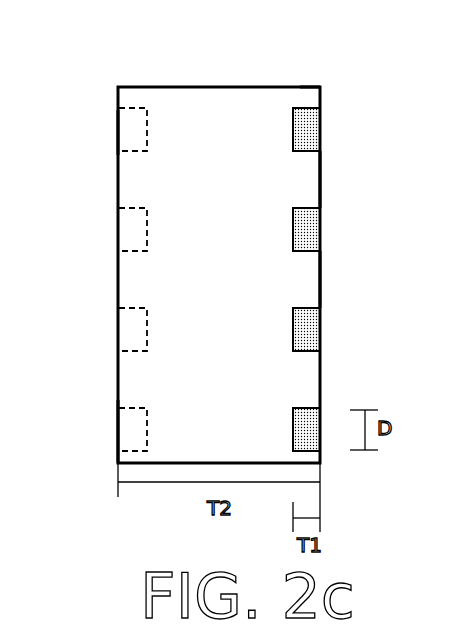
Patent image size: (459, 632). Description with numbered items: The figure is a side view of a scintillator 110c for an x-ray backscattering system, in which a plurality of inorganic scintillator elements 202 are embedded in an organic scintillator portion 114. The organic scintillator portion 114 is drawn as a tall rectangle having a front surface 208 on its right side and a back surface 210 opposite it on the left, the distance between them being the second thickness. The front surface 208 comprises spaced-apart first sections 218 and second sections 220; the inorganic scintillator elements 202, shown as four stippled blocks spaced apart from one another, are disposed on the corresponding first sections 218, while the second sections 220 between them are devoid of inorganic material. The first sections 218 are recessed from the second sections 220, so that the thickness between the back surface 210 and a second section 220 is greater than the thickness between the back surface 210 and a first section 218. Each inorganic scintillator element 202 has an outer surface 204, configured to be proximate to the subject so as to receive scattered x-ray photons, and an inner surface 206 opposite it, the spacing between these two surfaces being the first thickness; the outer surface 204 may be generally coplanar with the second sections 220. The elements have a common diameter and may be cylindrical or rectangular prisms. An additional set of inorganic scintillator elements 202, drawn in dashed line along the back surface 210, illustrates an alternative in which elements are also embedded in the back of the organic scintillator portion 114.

The scintillator 110c is at (148, 54).
The organic scintillator portion 114 is at (116, 134).
The inorganic scintillator element 202 is at (293, 135).
The outer surface 204 is at (320, 122).
The inner surface 206 is at (292, 108).
The front surface 208 is at (320, 92).
The back surface 210 is at (118, 413).
The spaced-apart first sections 218 is at (297, 138).
The second sections 220 is at (320, 177).